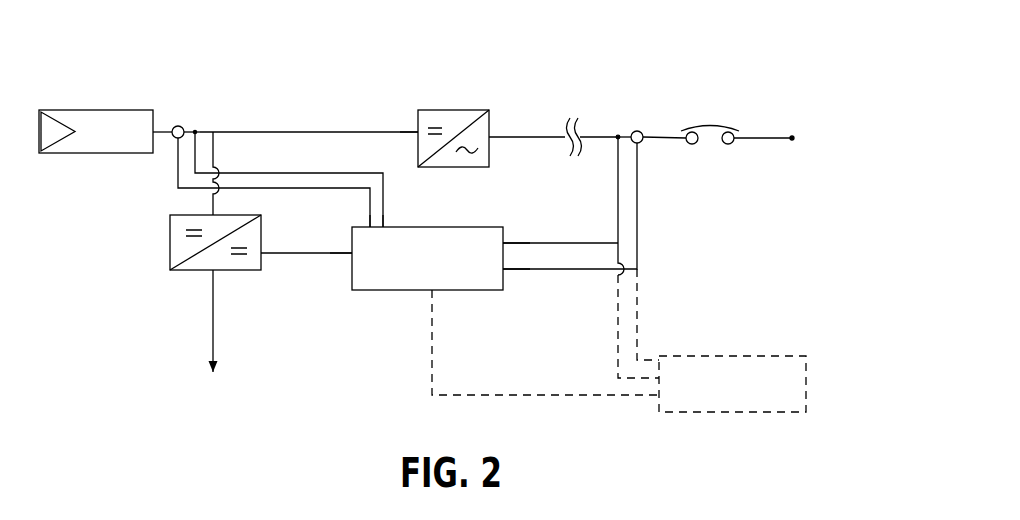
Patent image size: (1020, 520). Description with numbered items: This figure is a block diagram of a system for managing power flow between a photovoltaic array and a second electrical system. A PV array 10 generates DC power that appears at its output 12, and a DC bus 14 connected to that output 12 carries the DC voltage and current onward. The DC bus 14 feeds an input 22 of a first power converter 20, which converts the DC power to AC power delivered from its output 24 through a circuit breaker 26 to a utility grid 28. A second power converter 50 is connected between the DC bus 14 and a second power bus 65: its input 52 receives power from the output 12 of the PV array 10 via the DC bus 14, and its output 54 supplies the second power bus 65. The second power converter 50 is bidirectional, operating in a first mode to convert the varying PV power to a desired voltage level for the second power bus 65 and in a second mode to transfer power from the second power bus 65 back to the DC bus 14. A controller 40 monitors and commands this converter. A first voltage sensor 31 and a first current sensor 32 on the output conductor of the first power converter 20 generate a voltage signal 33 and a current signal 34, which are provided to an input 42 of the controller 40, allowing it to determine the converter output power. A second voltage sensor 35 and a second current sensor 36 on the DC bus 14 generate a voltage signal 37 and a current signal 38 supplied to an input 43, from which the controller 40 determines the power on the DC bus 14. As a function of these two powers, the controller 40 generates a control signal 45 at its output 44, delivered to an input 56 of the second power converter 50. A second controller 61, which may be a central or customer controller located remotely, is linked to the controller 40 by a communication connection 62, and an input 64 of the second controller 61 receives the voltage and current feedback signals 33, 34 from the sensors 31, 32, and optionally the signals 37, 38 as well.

The PV array 10 is at (79, 108).
The output 12 is at (158, 126).
The DC bus 14 is at (270, 130).
The first power converter 20 is at (440, 110).
The input 22 is at (413, 126).
The output 24 is at (500, 129).
The circuit breaker 26 is at (720, 116).
The utility grid 28 is at (838, 98).
The first voltage sensor 31 is at (616, 129).
The first current sensor 32 is at (642, 128).
The voltage signal 33 is at (617, 190).
The current signal 34 is at (637, 190).
The second voltage sensor 35 is at (183, 126).
The second current sensor 36 is at (200, 128).
The voltage signal 37 is at (175, 157).
The current signal 38 is at (194, 166).
The controller 40 is at (451, 227).
The input 42 is at (513, 290).
The input 43 is at (390, 222).
The output 44 is at (338, 271).
The control signal 45 is at (280, 255).
The second power converter 50 is at (169, 255).
The input 52 is at (220, 208).
The output 54 is at (205, 278).
The input 56 is at (272, 247).
The second controller 61 is at (808, 380).
The communication connection 62 is at (515, 397).
The input 64 is at (646, 342).
The second power bus 65 is at (214, 324).